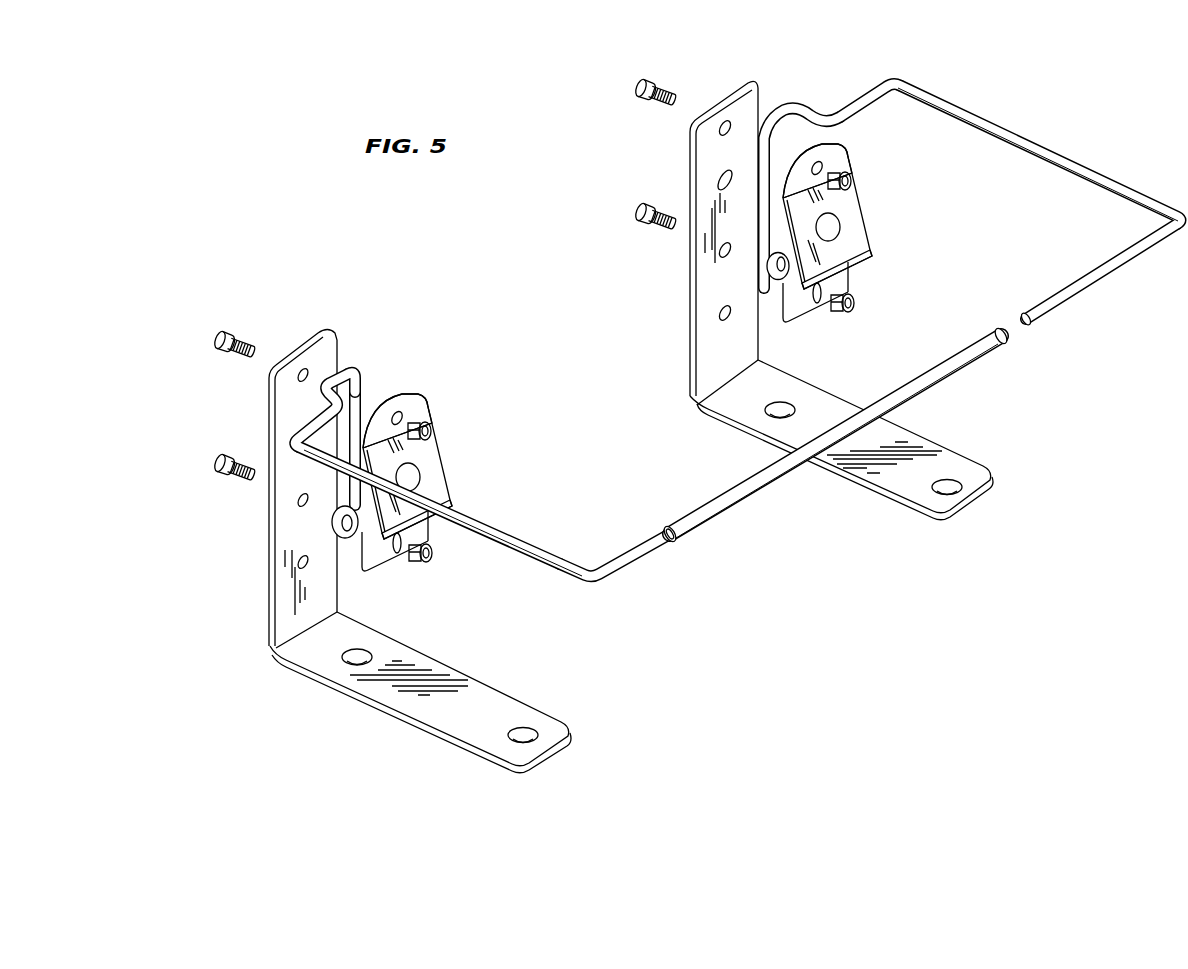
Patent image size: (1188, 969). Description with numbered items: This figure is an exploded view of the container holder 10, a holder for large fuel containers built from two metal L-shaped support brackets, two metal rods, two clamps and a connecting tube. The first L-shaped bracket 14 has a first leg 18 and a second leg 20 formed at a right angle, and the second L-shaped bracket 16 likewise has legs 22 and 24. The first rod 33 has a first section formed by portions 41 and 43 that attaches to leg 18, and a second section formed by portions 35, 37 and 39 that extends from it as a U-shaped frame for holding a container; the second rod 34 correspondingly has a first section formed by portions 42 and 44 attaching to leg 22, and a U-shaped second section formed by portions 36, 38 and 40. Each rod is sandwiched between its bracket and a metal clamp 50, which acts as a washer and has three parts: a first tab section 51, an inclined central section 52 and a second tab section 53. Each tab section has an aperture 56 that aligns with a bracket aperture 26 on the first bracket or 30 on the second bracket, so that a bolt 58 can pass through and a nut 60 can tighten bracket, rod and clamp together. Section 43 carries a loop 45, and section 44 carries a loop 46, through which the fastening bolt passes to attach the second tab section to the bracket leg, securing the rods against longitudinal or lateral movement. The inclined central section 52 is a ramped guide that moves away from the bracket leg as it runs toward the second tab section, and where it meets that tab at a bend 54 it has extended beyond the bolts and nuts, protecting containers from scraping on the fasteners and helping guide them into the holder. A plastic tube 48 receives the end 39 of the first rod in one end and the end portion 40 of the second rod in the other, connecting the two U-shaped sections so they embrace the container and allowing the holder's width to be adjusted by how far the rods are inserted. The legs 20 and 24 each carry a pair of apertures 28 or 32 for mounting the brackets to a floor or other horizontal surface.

The container holder 10 is at (996, 45).
The first L-shaped bracket 14 is at (253, 580).
The second L-shaped bracket 16 is at (675, 330).
The first leg of first L-shaped bracket 18 is at (282, 606).
The second leg of first L-shaped bracket 20 is at (512, 690).
The first leg of second L-shaped bracket 22 is at (700, 290).
The second leg of second L-shaped bracket 24 is at (932, 447).
The aperture 26 is at (303, 370).
The apertures 28 is at (352, 660).
The aperture 30 is at (720, 250).
The apertures 32 is at (775, 412).
The first rod 33 is at (630, 593).
The second rod 34 is at (1100, 313).
The second section portion of first rod 35 is at (312, 424).
The second section portion of second rod 36 is at (852, 94).
The second section portion of first rod 37 is at (515, 533).
The second section portion of second rod 38 is at (1062, 153).
The end of first rod 39 is at (610, 558).
The end portion of second rod 40 is at (1085, 272).
The first section portion of first rod 41 is at (350, 364).
The first section portion of second rod 42 is at (777, 104).
The first section portion of first rod 43 is at (366, 390).
The first section portion of second rod 44 is at (771, 153).
The loop 45 is at (350, 540).
The loop 46 is at (772, 285).
The tube 48 is at (748, 500).
The clamp 50 is at (462, 462).
The first tab section 51 is at (420, 402).
The inclined central section 52 is at (442, 480).
The second tab section 53 is at (378, 572).
The bend 54 is at (432, 537).
The aperture 56 is at (408, 410).
The bolt 58 is at (668, 92).
The nut 60 is at (432, 432).